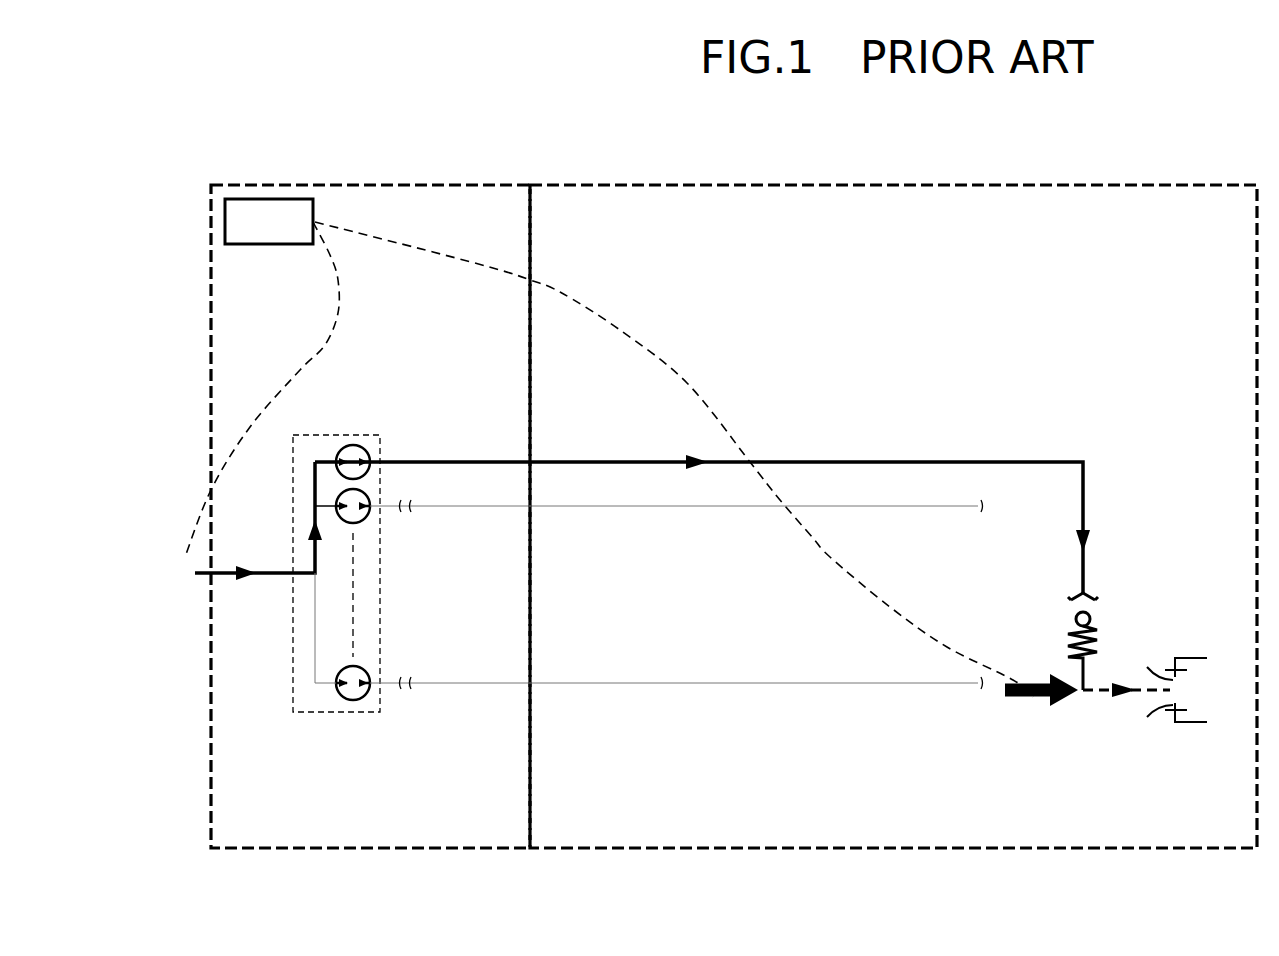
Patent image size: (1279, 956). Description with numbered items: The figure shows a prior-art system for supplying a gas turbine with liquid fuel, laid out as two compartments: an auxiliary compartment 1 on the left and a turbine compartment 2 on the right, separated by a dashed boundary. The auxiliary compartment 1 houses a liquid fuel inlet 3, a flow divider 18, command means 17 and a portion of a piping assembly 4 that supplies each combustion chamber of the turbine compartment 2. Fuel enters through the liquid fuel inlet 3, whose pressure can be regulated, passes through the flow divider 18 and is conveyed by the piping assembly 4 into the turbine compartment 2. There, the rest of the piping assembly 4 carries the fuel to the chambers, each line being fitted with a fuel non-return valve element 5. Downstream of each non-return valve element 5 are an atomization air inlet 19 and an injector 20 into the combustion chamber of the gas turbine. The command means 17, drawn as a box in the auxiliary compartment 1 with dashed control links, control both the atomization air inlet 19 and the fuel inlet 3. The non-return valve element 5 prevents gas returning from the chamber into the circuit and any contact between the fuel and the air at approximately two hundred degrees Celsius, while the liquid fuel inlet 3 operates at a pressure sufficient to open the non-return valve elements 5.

The auxiliary compartment 1 is at (232, 844).
The turbine compartment 2 is at (549, 844).
The liquid fuel inlet 3 is at (249, 524).
The piping assembly 4 is at (788, 438).
The fuel non-return valve element 5 is at (1100, 636).
The command means 17 is at (269, 245).
The flow divider 18 is at (337, 712).
The atomization air inlet 19 is at (1033, 692).
The injector 20 is at (1168, 732).